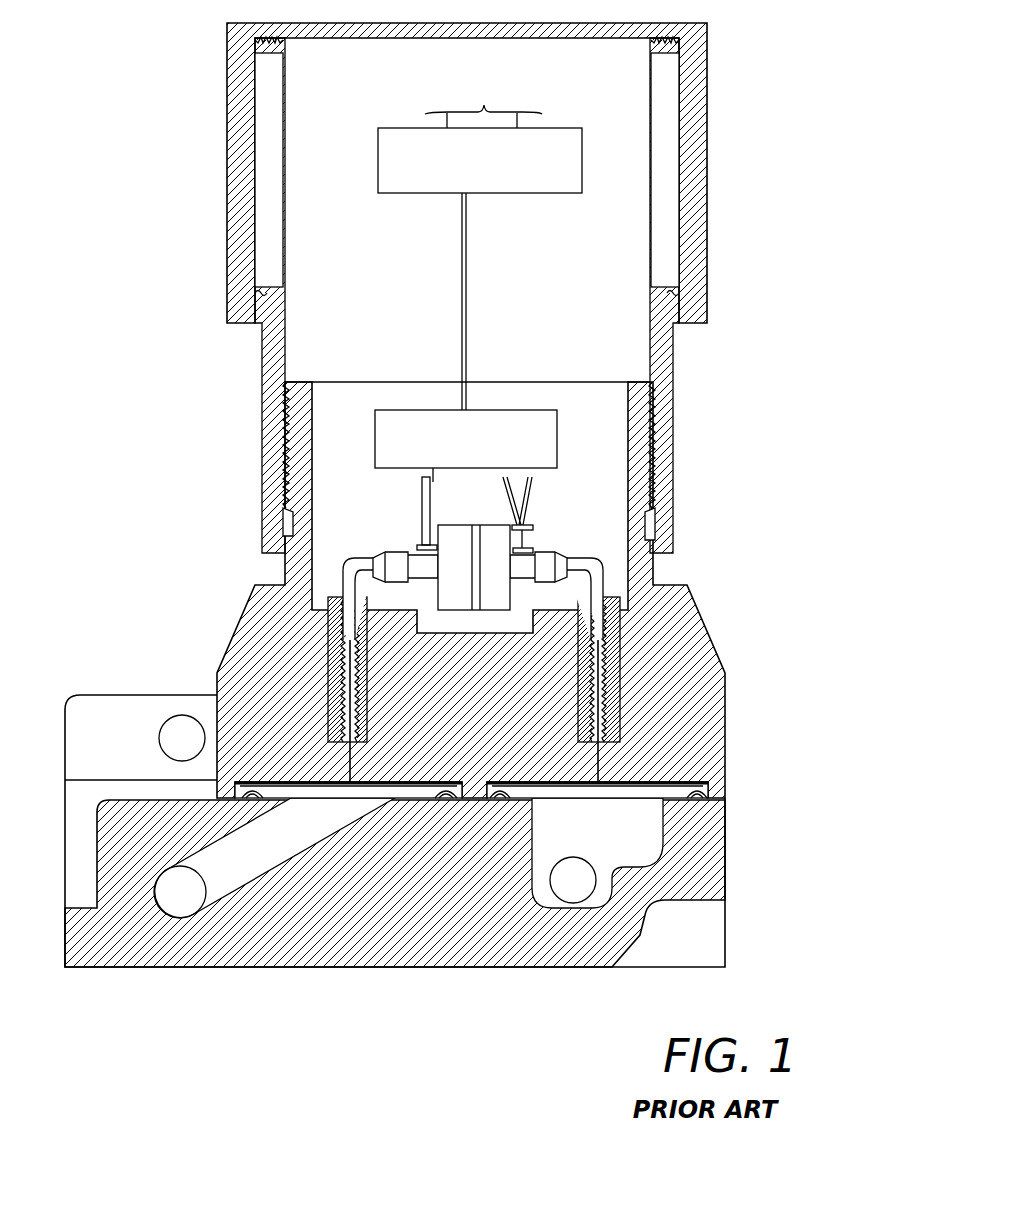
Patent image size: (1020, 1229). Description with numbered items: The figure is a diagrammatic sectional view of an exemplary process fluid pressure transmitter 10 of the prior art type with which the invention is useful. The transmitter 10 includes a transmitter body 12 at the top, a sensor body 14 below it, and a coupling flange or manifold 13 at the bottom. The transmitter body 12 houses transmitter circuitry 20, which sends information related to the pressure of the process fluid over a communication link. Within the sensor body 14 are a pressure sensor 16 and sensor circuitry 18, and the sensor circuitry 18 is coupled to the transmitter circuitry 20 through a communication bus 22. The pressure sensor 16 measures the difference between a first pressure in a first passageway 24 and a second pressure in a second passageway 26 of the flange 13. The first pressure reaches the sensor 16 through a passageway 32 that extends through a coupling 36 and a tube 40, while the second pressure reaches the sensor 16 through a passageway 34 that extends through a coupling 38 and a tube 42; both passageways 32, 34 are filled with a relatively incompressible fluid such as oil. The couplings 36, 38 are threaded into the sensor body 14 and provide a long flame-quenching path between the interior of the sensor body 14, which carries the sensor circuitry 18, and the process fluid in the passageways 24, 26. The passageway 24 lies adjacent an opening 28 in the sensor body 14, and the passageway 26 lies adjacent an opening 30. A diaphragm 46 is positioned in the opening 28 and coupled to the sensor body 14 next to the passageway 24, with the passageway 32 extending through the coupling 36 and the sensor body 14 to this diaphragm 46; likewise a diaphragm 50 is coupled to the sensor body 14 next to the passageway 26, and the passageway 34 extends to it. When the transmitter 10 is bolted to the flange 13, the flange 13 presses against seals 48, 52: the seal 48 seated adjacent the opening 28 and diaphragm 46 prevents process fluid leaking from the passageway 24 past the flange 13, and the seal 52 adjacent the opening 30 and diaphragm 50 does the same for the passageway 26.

The process fluid pressure transmitter 10 is at (810, 156).
The transmitter body 12 is at (708, 121).
The coupling flange or manifold 13 is at (93, 720).
The sensor body 14 is at (698, 610).
The pressure sensor 16 is at (458, 545).
The sensor circuitry 18 is at (557, 436).
The transmitter circuitry 20 is at (582, 144).
The communication bus 22 is at (468, 273).
The passageway 24 is at (243, 860).
The passageway 26 is at (598, 847).
The opening 28 is at (257, 787).
The opening 30 is at (690, 768).
The passageway 32 is at (327, 655).
The passageway 34 is at (618, 657).
The coupling 36 is at (328, 617).
The coupling 38 is at (618, 688).
The tube 40 is at (343, 574).
The tube 42 is at (601, 568).
The diaphragm 46 is at (290, 786).
The seal 48 is at (343, 790).
The diaphragm 50 is at (660, 778).
The seal 52 is at (603, 790).